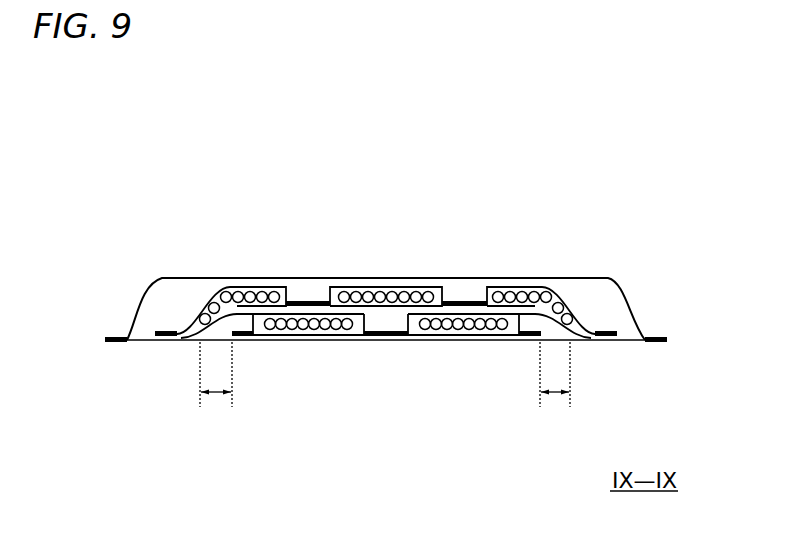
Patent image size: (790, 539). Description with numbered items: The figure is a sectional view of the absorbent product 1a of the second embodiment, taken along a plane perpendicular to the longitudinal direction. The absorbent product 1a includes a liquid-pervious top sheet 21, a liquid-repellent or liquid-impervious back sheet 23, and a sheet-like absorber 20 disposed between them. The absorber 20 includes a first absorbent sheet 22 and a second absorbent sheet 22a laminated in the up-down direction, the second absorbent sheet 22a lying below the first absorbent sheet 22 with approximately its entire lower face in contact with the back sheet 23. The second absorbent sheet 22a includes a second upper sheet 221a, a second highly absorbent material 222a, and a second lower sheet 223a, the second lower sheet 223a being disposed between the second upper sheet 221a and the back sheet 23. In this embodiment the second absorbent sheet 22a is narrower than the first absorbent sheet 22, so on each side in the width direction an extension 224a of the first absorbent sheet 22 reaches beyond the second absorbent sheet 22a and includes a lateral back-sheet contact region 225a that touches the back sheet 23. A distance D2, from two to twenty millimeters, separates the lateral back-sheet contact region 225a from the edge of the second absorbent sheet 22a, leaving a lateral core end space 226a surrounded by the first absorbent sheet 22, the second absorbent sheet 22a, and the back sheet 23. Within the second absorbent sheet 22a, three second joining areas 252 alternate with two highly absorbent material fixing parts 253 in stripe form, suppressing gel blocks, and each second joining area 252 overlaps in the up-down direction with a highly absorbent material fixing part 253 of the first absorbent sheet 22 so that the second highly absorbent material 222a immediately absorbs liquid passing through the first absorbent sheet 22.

The absorbent product 1a is at (112, 103).
The absorber 20 is at (185, 150).
The first absorbent sheet 22 is at (240, 205).
The top sheet 21 is at (582, 278).
The second absorbent sheet 22a is at (492, 434).
The second upper sheet 221a is at (505, 341).
The second highly absorbent material 222a is at (320, 342).
The second lower sheet 223a is at (462, 345).
The extension 224a is at (185, 312).
The lateral back-sheet contact region 225a is at (178, 344).
The lateral core end space 226a is at (203, 303).
The back sheet 23 is at (628, 341).
The second joining area 252 is at (305, 300).
The highly absorbent material fixing part 253 is at (222, 278).
The distance D2 is at (217, 397).